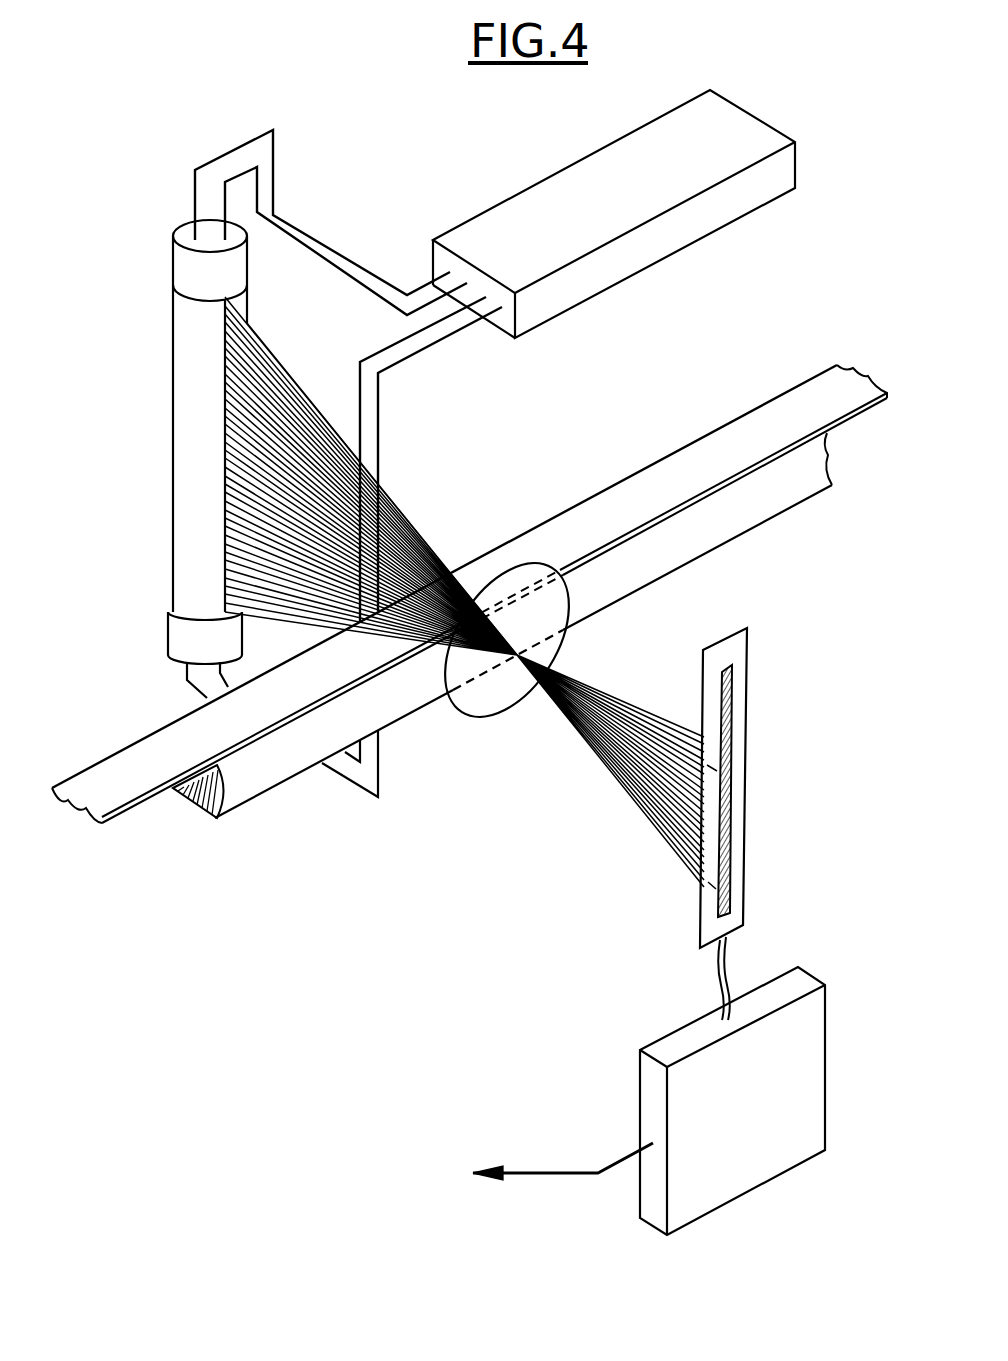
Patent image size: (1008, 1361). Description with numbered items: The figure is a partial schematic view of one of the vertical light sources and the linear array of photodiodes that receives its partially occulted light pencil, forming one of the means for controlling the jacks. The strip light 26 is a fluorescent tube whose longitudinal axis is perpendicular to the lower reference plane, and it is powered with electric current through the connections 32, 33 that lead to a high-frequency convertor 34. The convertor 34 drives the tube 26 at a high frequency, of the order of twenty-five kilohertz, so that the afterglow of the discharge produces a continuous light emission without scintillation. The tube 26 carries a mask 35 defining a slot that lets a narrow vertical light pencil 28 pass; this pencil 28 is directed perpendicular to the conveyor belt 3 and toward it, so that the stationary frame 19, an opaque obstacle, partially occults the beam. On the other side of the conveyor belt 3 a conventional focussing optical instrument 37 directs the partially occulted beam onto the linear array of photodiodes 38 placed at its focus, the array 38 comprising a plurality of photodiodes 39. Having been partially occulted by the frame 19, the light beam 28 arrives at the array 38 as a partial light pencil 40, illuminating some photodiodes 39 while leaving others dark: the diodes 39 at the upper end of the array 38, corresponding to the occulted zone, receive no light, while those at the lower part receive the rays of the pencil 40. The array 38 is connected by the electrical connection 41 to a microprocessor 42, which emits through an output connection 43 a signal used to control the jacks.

The conveyor belt 3 is at (740, 437).
The stationary frame 19 is at (795, 478).
The light source 26 is at (172, 459).
The light pencil 28 is at (293, 408).
The connection 32 is at (335, 257).
The connection 33 is at (420, 347).
The high-frequency convertor 34 is at (737, 140).
The mask 35 is at (187, 427).
The focussing optical instrument 37 is at (487, 714).
The linear array of photodiodes 38 is at (763, 788).
The photodiodes 39 is at (725, 812).
The partial light pencil 40 is at (630, 768).
The electrical connection 41 is at (730, 962).
The microprocessor 42 is at (788, 1092).
The output connection 43 is at (553, 1171).